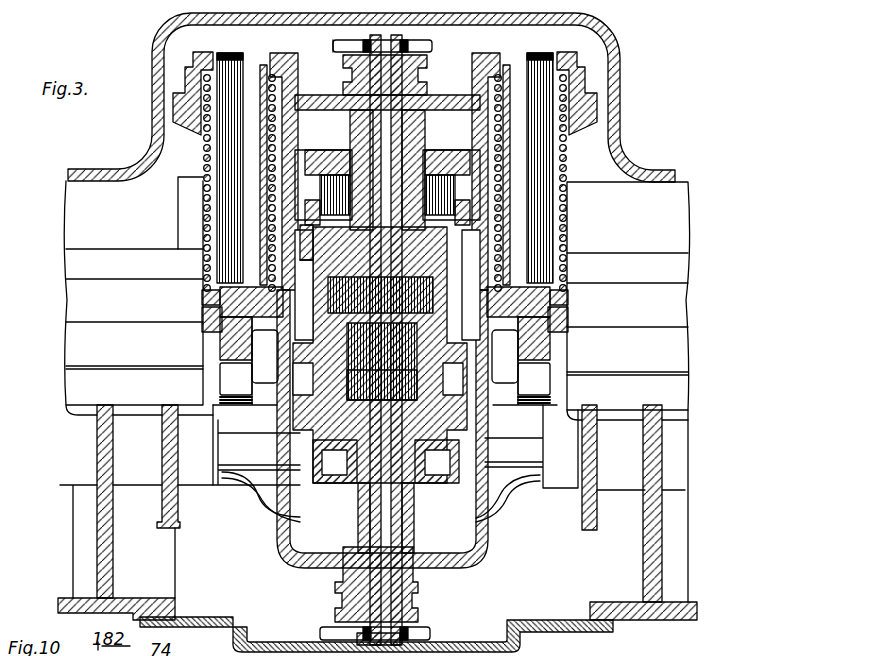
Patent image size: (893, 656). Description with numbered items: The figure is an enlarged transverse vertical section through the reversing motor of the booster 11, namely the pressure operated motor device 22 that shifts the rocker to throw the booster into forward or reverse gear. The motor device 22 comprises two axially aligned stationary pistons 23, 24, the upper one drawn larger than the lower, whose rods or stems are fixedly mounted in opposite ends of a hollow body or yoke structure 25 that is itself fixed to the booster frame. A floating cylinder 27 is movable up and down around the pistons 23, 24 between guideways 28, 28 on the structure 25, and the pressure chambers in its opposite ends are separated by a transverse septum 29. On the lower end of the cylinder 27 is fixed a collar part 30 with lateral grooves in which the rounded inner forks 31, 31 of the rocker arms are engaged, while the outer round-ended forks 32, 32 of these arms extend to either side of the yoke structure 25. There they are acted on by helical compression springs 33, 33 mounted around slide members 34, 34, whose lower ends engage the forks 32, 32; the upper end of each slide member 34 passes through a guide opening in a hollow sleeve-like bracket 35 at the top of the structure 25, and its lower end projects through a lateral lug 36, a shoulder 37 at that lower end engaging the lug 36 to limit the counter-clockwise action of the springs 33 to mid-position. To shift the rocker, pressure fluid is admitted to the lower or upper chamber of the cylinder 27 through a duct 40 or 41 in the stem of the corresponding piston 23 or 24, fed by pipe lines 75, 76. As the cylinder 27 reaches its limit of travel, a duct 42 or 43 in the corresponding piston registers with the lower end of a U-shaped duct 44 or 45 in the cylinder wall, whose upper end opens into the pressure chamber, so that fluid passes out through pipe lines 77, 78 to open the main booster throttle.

The booster 11 is at (620, 140).
The pressure operated motor device 22 is at (135, 381).
The stationary piston 23 is at (376, 405).
The stationary piston 24 is at (405, 262).
The hollow body or yoke structure 25 is at (277, 548).
The floating cylinder 27 is at (326, 310).
The guideways 28 is at (300, 265).
The transverse septum 29 is at (400, 316).
The collar part 30 is at (452, 468).
The inner forks 31 is at (296, 373).
The outer round-ended forks 32 is at (232, 380).
The helical compression springs 33 is at (204, 166).
The slide members 34 is at (217, 212).
The hollow sleeve-like bracket 35 is at (187, 70).
The lateral lug 36 is at (202, 332).
The shoulder 37 is at (202, 302).
The duct 40 is at (402, 536).
The duct 41 is at (398, 148).
The duct 42 is at (358, 537).
The duct 43 is at (378, 148).
The U-shaped duct 44 is at (300, 452).
The U-shaped duct 45 is at (300, 232).
The pipe line 75 is at (430, 634).
The pipe line 76 is at (432, 46).
The pipe line 77 is at (322, 634).
The pipe line 78 is at (333, 46).